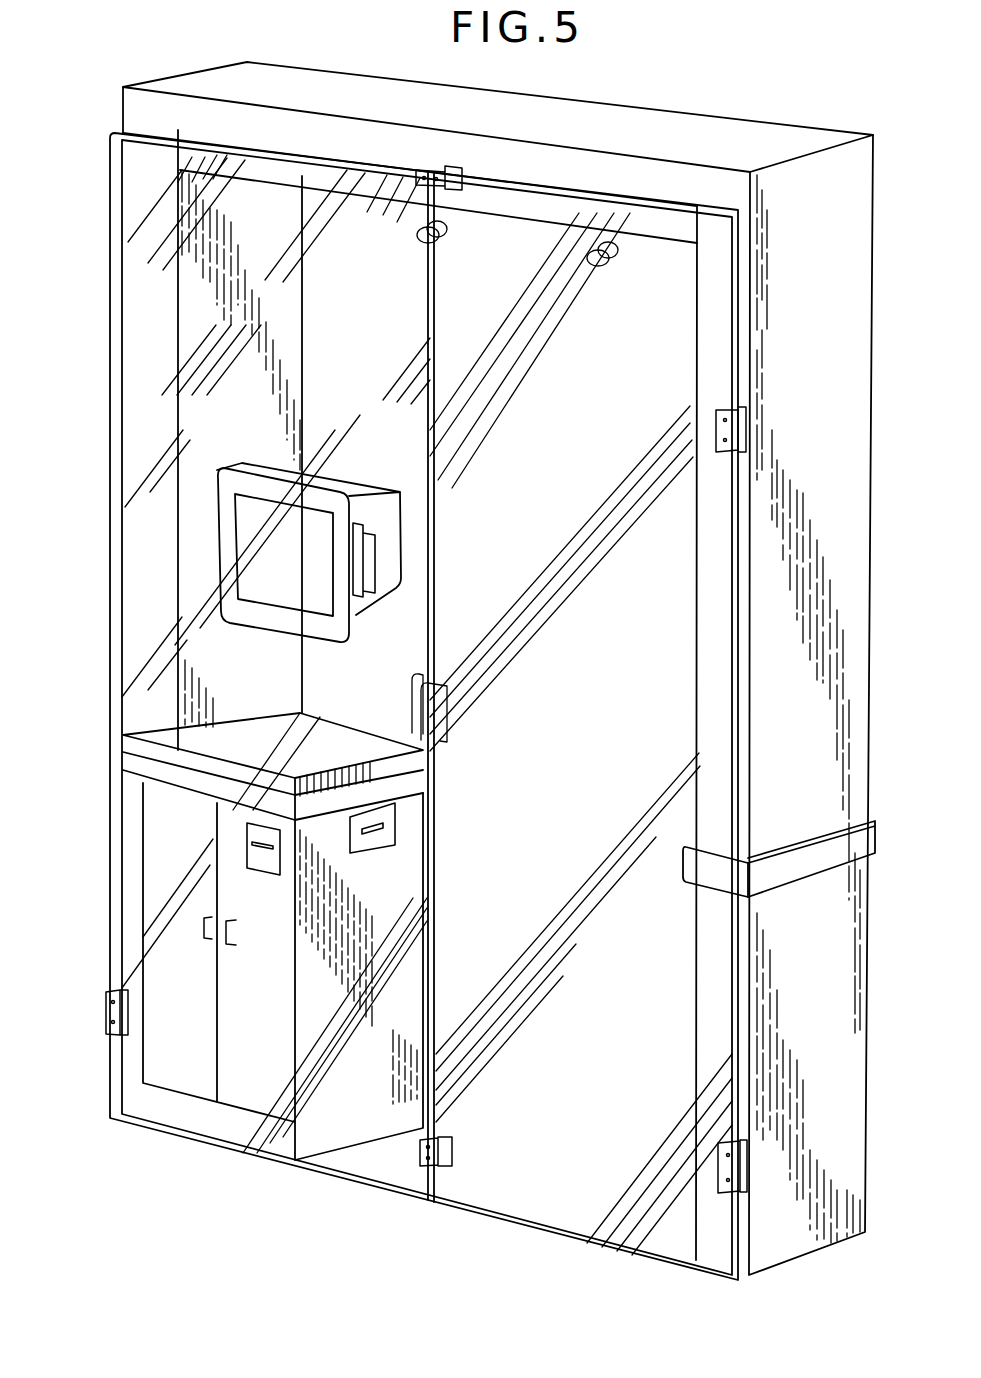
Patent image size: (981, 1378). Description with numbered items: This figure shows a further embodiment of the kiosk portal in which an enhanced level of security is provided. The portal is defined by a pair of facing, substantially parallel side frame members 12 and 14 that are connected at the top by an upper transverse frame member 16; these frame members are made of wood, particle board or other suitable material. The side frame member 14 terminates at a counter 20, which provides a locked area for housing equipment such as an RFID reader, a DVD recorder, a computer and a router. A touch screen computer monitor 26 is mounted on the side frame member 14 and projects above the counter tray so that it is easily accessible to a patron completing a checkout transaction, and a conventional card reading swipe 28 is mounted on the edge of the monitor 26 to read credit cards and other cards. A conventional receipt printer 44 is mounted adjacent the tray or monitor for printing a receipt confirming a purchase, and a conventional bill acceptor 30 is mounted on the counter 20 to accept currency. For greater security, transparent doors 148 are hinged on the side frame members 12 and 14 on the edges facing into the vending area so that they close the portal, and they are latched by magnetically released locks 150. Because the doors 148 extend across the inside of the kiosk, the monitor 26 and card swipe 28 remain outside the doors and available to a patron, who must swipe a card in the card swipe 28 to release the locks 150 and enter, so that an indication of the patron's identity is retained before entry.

The side frame member 12 is at (853, 550).
The side frame member 14 is at (140, 109).
The upper transverse frame member 16 is at (690, 128).
The counter 20 is at (330, 1127).
The touch screen computer monitor 26 is at (338, 478).
The card reading swipe 28 is at (373, 557).
The bill acceptor 30 is at (266, 870).
The receipt printer 44 is at (403, 840).
The transparent doors 148 is at (210, 432).
The magnetically released locks 150 is at (460, 167).